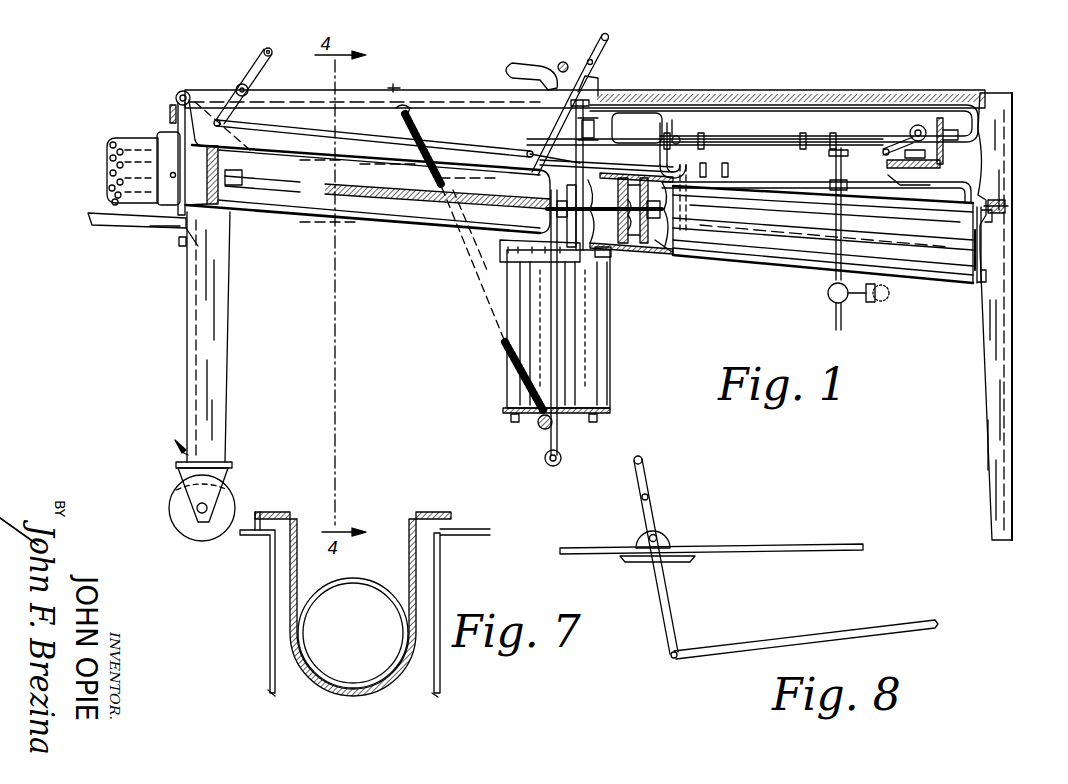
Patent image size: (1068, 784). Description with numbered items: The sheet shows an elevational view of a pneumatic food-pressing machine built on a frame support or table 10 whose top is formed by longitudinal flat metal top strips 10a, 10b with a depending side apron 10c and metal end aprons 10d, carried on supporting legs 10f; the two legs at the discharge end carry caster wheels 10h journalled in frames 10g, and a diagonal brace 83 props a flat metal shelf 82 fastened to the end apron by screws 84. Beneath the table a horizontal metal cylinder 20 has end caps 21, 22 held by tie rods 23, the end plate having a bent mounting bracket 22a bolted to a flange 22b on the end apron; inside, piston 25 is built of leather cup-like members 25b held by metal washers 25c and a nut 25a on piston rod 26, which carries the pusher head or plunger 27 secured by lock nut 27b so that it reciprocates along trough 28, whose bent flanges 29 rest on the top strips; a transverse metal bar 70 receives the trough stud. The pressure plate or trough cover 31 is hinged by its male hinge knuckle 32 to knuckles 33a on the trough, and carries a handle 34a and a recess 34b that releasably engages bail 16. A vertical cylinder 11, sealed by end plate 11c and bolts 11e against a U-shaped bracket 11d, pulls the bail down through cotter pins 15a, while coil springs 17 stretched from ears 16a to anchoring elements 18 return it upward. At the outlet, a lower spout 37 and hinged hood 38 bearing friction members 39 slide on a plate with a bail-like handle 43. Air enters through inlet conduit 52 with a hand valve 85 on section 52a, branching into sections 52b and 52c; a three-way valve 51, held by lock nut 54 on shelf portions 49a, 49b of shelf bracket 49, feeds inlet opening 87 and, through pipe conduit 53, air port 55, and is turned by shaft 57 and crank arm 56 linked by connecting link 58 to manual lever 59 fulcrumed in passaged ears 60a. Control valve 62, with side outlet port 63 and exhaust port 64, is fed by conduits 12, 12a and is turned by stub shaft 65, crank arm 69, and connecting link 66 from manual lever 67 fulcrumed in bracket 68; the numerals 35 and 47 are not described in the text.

In FIG. 1, the frame support or table 10 is at (723, 88).
In FIG. 7, the longitudinal flat metal top strip 10a is at (265, 534).
In FIG. 1, the longitudinal flat metal top strip 10b is at (762, 90).
In FIG. 7, the longitudinal flat metal top strip 10b is at (478, 537).
In FIG. 8, the longitudinal flat metal top strip 10b is at (798, 552).
In FIG. 1, the depending side apron 10c is at (985, 98).
In FIG. 1, the depending metal end apron 10d is at (1010, 96).
In FIG. 1, the supporting leg 10f is at (190, 300).
In FIG. 1, the caster frame 10g is at (228, 462).
In FIG. 1, the caster wheel 10h is at (225, 503).
In FIG. 1, the cylinder 11 is at (592, 335).
In FIG. 1, the sealing end plate 11c is at (605, 416).
In FIG. 1, the U-shaped bracket 11d is at (503, 252).
In FIG. 1, the bolts 11e is at (600, 358).
In FIG. 1, the air conduit 12 is at (600, 120).
In FIG. 1, the air conduit 12a is at (793, 105).
In FIG. 1, the cotter pin 15a is at (545, 461).
In FIG. 1, the U-shaped link or bail 16 is at (598, 48).
In FIG. 1, the apertured ears 16a is at (540, 428).
In FIG. 1, the coil spring 17 is at (507, 357).
In FIG. 1, the anchoring element 18 is at (436, 112).
In FIG. 1, the metal cylinder 20 is at (900, 290).
In FIG. 1, the end cap 21 is at (610, 257).
In FIG. 1, the end plate 22 is at (977, 283).
In FIG. 1, the mounting bracket 22a is at (977, 230).
In FIG. 1, the inward extension or flange 22b is at (1000, 200).
In FIG. 1, the tie rods 23 is at (778, 268).
In FIG. 1, the piston 25 is at (648, 240).
In FIG. 1, the nut 25a is at (667, 230).
In FIG. 1, the cup-like member 25b is at (625, 245).
In FIG. 1, the metal washer 25c is at (672, 252).
In FIG. 1, the piston rod 26 is at (378, 202).
In FIG. 1, the pusher head or plunger 27 is at (218, 206).
In FIG. 1, the lock nut 27b is at (232, 186).
In FIG. 1, the trough 28 is at (405, 228).
In FIG. 1, the flanges 29 is at (394, 90).
In FIG. 7, the flanges 29 is at (298, 514).
In FIG. 7, the pressure plate or trough cover 31 is at (348, 588).
In FIG. 1, the male hinge knuckle 32 is at (177, 93).
In FIG. 1, the hinge knuckles 33a is at (178, 103).
In FIG. 1, the handle 34a is at (516, 66).
In FIG. 1, the recess 34b is at (561, 62).
In FIG. 1, the bracket 35 is at (592, 80).
In FIG. 1, the lower spout portion 37 is at (108, 188).
In FIG. 1, the upper spout portion or hood 38 is at (114, 142).
In FIG. 1, the friction members 39 is at (108, 196).
In FIG. 1, the bail-like handle 43 is at (125, 222).
In FIG. 1, the pin 47 is at (192, 242).
In FIG. 1, the shelf bracket 49 is at (944, 149).
In FIG. 1, the shelf portion 49a is at (730, 169).
In FIG. 1, the shelf portion 49b is at (942, 166).
In FIG. 1, the three-way valve 51 is at (682, 145).
In FIG. 1, the air inlet conduit 52 is at (834, 160).
In FIG. 1, the conduit section 52a is at (756, 143).
In FIG. 1, the conduit section 52b is at (833, 138).
In FIG. 1, the conduit section 52c is at (637, 128).
In FIG. 1, the pipe conduit 53 is at (880, 183).
In FIG. 1, the lock nut 54 is at (688, 169).
In FIG. 1, the air port 55 is at (662, 122).
In FIG. 1, the crank arm 56 is at (670, 118).
In FIG. 1, the shaft 57 is at (700, 141).
In FIG. 1, the connecting link 58 is at (290, 132).
In FIG. 1, the manually operable lever 59 is at (262, 70).
In FIG. 1, the passaged ears 60a is at (240, 84).
In FIG. 8, the passaged ears 60a is at (658, 537).
In FIG. 1, the control valve 62 is at (937, 125).
In FIG. 1, the side outlet port 63 is at (955, 127).
In FIG. 1, the air outlet port 64 is at (888, 173).
In FIG. 1, the stub shaft 65 is at (920, 125).
In FIG. 1, the connecting link 66 is at (860, 148).
In FIG. 8, the connecting link 66 is at (710, 647).
In FIG. 1, the manually operable lever 67 is at (594, 65).
In FIG. 8, the manually operable lever 67 is at (650, 495).
In FIG. 8, the bracket 68 is at (680, 562).
In FIG. 1, the crank arm or lever 69 is at (888, 146).
In FIG. 1, the metal bar 70 is at (579, 133).
In FIG. 1, the flat metal shelf 82 is at (150, 225).
In FIG. 1, the brace 83 is at (175, 441).
In FIG. 1, the screws 84 is at (179, 241).
In FIG. 1, the hand valve 85 is at (862, 303).
In FIG. 1, the air inlet opening 87 is at (603, 147).